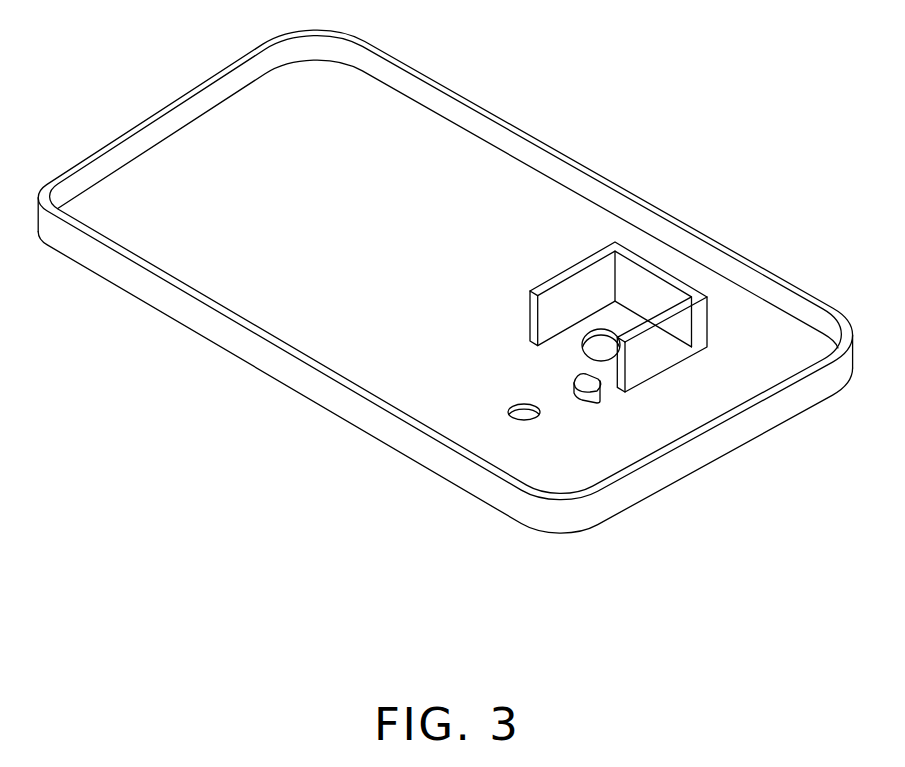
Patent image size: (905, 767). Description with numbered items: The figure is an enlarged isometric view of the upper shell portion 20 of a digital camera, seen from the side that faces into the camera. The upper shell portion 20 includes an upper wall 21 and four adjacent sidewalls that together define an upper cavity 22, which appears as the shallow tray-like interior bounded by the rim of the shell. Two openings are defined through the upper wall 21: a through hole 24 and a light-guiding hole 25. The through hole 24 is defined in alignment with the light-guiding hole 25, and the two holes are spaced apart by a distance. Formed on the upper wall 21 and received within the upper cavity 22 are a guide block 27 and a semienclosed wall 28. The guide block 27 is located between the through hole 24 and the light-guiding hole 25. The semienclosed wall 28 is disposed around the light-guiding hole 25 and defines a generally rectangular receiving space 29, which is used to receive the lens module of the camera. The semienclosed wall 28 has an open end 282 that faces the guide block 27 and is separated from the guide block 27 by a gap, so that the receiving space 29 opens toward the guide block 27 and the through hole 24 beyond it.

The upper shell portion 20 is at (226, 360).
The upper wall 21 is at (233, 135).
The upper cavity 22 is at (367, 100).
The through hole 24 is at (525, 413).
The light-guiding hole 25 is at (603, 337).
The guide block 27 is at (590, 391).
The semienclosed wall 28 is at (671, 348).
The open end 282 is at (600, 343).
The receiving space 29 is at (628, 293).